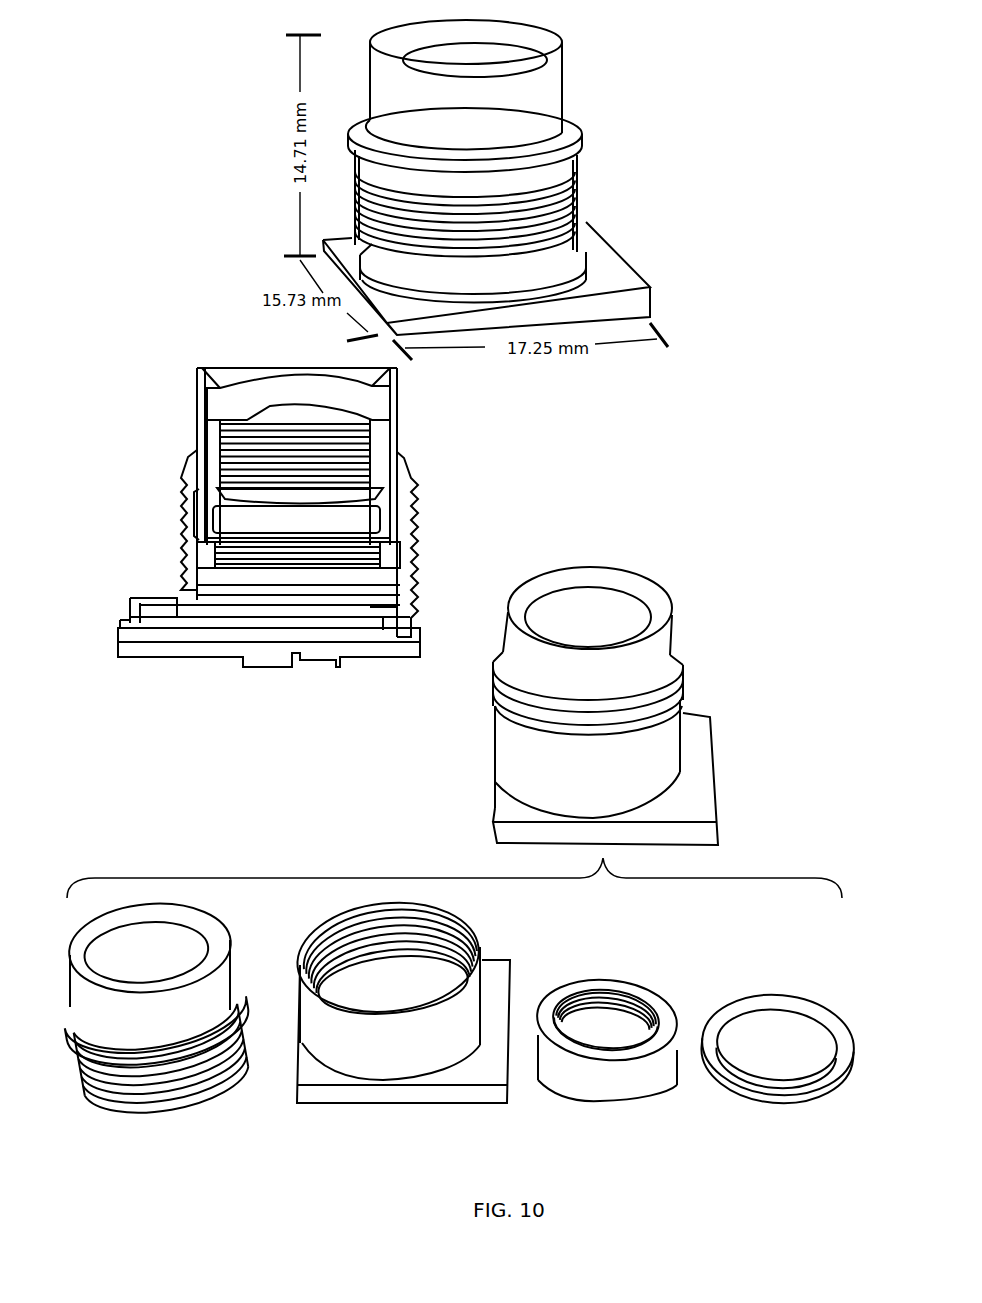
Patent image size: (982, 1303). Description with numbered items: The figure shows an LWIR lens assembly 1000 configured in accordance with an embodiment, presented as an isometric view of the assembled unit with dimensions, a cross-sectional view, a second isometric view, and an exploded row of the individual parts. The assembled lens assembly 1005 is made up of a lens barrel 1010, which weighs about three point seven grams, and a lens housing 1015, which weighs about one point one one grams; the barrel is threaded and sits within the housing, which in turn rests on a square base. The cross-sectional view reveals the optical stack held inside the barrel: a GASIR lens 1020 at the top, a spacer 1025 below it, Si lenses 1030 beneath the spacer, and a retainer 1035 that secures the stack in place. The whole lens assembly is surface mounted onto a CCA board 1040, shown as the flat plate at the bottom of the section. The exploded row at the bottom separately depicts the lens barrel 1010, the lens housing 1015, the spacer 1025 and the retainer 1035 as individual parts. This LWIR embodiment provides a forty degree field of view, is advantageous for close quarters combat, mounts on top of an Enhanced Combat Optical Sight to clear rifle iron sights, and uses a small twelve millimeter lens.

The LWIR lens assembly 1000 is at (83, 22).
The lens assembly 1005 is at (439, 474).
The lens barrel 1010 is at (354, 584).
The lens housing 1015 is at (495, 675).
The GASIR lens 1020 is at (192, 397).
The spacer 1025 is at (192, 443).
The Si lenses 1030 is at (180, 513).
The retainer 1035 is at (186, 555).
The CCA board 1040 is at (269, 664).